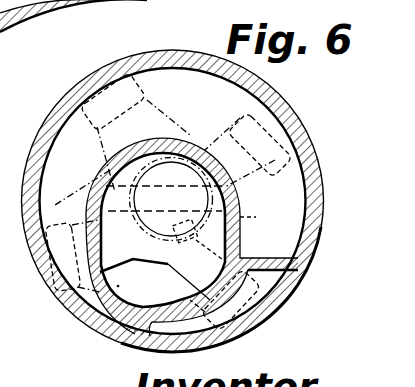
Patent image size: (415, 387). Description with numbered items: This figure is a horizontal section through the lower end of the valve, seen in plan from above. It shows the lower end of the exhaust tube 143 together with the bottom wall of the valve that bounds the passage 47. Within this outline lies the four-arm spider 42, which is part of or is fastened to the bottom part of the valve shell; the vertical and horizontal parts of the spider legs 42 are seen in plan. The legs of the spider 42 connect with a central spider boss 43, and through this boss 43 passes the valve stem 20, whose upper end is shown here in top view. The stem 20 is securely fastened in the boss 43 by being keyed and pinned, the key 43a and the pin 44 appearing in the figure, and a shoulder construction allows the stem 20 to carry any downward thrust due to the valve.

The valve stem 20 is at (176, 168).
The four-arm spider 42 is at (107, 147).
The boss 43 is at (118, 286).
The key 43a is at (170, 263).
The pin 44 is at (261, 235).
The passage 47 is at (272, 281).
The exhaust tube 143 is at (292, 238).